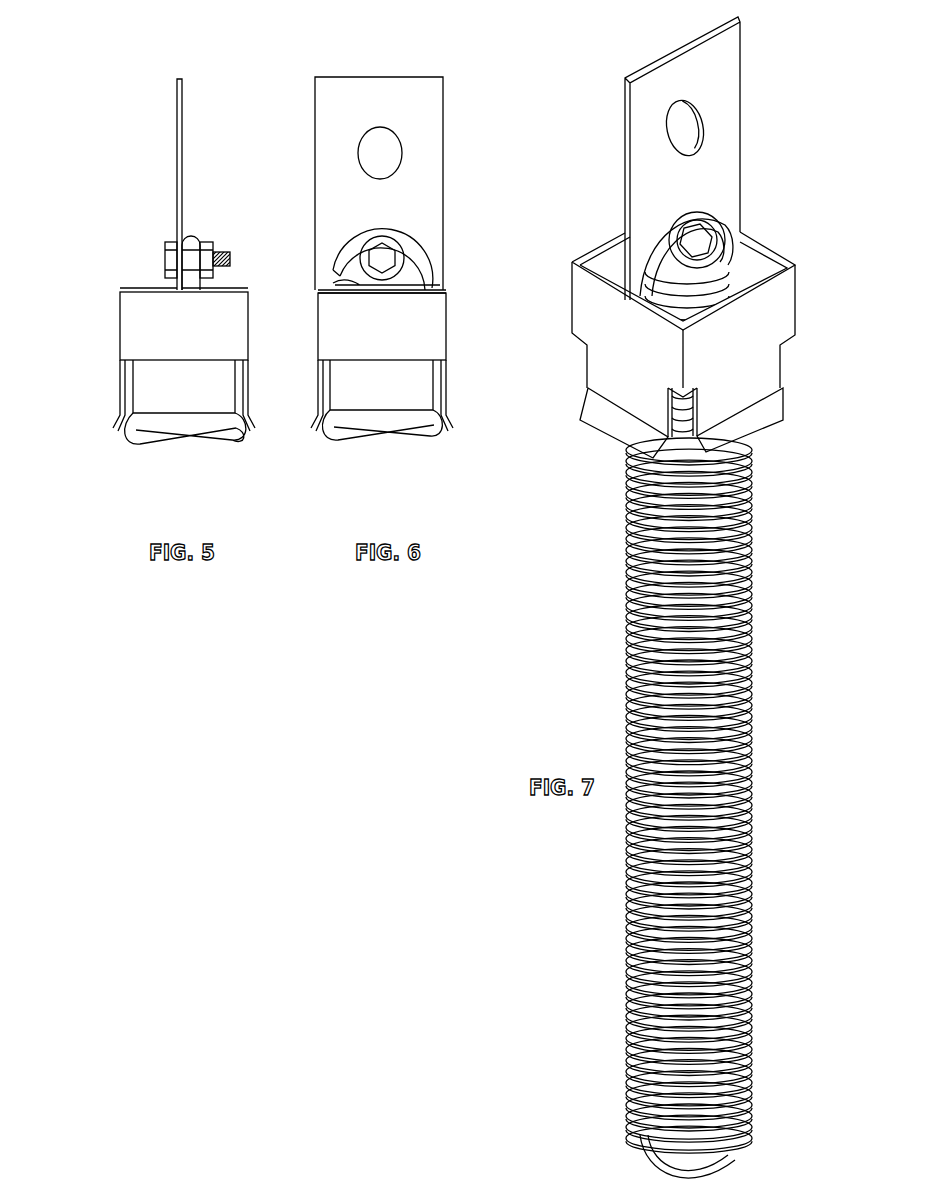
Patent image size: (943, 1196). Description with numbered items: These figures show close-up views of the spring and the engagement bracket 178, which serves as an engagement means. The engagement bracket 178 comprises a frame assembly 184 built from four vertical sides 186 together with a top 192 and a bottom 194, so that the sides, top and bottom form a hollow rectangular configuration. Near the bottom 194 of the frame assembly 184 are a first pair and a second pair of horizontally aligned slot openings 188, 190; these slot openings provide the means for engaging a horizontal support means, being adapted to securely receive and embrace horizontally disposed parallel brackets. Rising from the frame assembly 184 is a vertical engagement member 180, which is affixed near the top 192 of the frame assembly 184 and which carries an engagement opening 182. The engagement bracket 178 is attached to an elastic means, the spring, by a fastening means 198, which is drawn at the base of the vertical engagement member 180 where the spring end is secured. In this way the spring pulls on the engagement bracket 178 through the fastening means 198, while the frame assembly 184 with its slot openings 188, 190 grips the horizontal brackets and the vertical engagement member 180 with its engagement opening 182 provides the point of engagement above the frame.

In FIG. 5, the engagement bracket 178 is at (179, 171).
In FIG. 6, the engagement bracket 178 is at (433, 163).
In FIG. 7, the engagement bracket 178 is at (688, 158).
In FIG. 5, the vertical engagement member 180 is at (176, 162).
In FIG. 6, the vertical engagement member 180 is at (418, 85).
In FIG. 7, the vertical engagement member 180 is at (658, 95).
In FIG. 6, the engagement opening 182 is at (396, 162).
In FIG. 7, the engagement opening 182 is at (670, 130).
In FIG. 5, the frame assembly 184 is at (173, 379).
In FIG. 7, the frame assembly 184 is at (708, 391).
In FIG. 5, the vertical sides 186 is at (210, 338).
In FIG. 6, the vertical sides 186 is at (420, 337).
In FIG. 7, the vertical sides 186 is at (752, 362).
In FIG. 5, the first pair of horizontally aligned slot openings 188 is at (242, 437).
In FIG. 6, the first pair of horizontally aligned slot openings 188 is at (437, 420).
In FIG. 7, the first pair of horizontally aligned slot openings 188 is at (783, 389).
In FIG. 5, the second pair of horizontally aligned slot openings 190 is at (124, 440).
In FIG. 7, the second pair of horizontally aligned slot openings 190 is at (572, 390).
In FIG. 5, the top 192 is at (234, 292).
In FIG. 5, the bottom 194 is at (262, 432).
In FIG. 7, the bottom 194 is at (604, 470).
In FIG. 5, the fastening means 198 is at (208, 240).
In FIG. 6, the fastening means 198 is at (382, 258).
In FIG. 7, the fastening means 198 is at (697, 238).